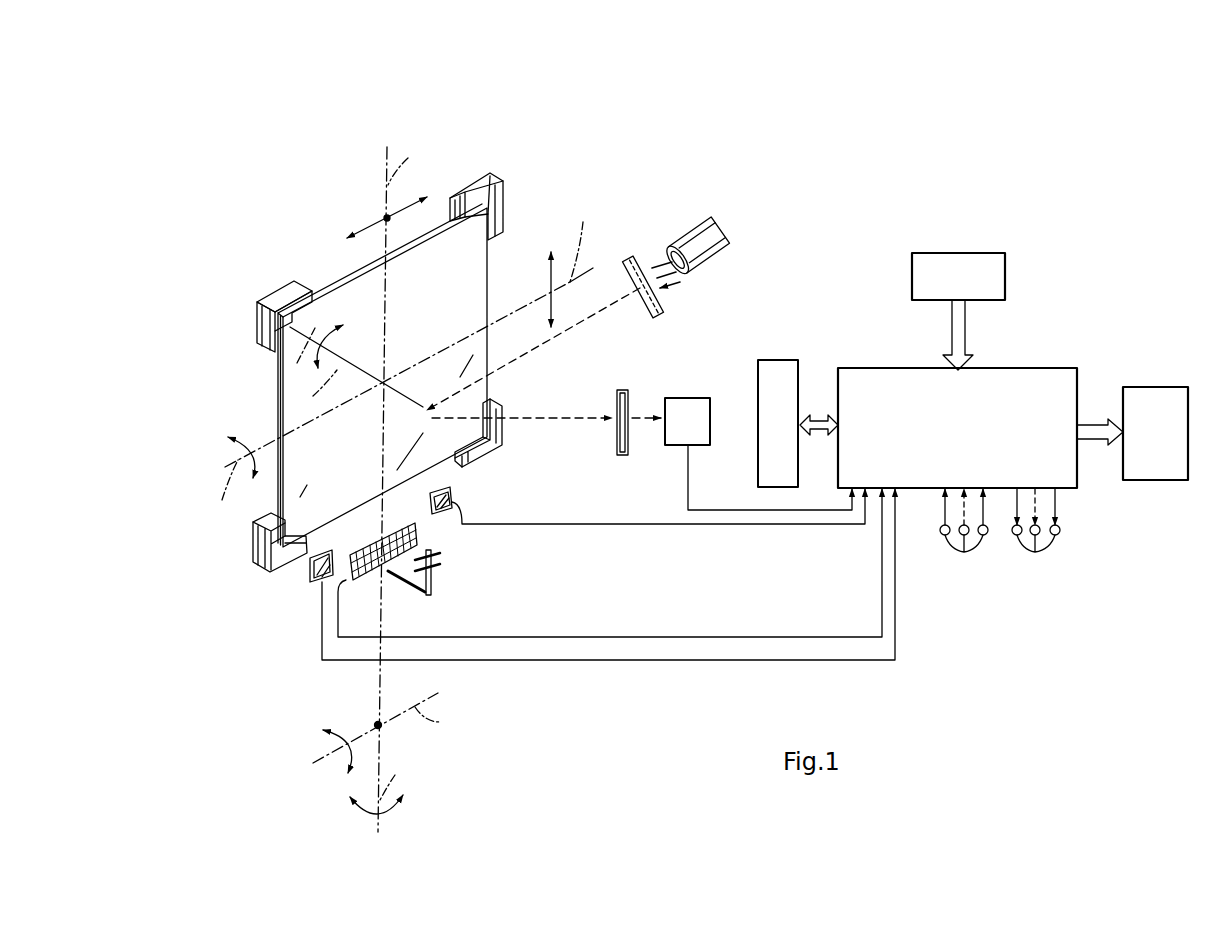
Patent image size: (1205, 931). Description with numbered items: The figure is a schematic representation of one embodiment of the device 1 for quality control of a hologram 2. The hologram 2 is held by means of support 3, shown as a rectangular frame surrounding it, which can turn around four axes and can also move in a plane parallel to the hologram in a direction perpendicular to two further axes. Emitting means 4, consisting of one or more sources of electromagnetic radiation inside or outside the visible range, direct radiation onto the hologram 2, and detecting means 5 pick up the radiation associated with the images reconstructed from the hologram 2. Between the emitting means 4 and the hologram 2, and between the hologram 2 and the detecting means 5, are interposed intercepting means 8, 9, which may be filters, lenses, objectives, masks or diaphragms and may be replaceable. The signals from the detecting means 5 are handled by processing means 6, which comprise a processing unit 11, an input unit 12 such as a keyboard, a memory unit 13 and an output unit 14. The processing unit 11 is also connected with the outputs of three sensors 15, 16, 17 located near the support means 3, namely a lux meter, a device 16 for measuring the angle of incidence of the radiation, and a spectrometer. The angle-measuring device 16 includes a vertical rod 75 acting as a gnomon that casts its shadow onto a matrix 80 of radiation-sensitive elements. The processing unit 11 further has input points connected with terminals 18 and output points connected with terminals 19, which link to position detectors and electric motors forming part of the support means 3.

The device 1 is at (258, 690).
The hologram 2 is at (462, 275).
The means of support 3 is at (250, 567).
The emitting means 4 is at (693, 241).
The detecting means 5 is at (690, 397).
The processing means 6 is at (1040, 350).
The intercepting means 8 is at (633, 258).
The intercepting means 9 is at (621, 390).
The processing unit 11 is at (880, 387).
The input unit 12 is at (930, 273).
The memory unit 13 is at (775, 372).
The output unit 14 is at (1156, 457).
The sensor 15 is at (453, 514).
The device for measuring the angle of incidence 16 is at (388, 580).
The sensor 17 is at (308, 580).
The terminals 18 is at (964, 537).
The terminals 19 is at (1036, 537).
The vertical rod 75 is at (437, 585).
The matrix 80 is at (372, 582).